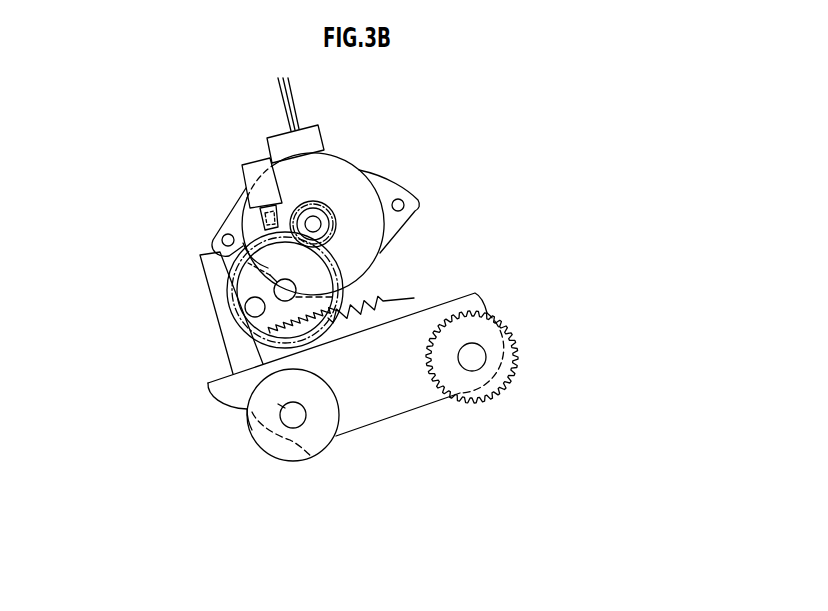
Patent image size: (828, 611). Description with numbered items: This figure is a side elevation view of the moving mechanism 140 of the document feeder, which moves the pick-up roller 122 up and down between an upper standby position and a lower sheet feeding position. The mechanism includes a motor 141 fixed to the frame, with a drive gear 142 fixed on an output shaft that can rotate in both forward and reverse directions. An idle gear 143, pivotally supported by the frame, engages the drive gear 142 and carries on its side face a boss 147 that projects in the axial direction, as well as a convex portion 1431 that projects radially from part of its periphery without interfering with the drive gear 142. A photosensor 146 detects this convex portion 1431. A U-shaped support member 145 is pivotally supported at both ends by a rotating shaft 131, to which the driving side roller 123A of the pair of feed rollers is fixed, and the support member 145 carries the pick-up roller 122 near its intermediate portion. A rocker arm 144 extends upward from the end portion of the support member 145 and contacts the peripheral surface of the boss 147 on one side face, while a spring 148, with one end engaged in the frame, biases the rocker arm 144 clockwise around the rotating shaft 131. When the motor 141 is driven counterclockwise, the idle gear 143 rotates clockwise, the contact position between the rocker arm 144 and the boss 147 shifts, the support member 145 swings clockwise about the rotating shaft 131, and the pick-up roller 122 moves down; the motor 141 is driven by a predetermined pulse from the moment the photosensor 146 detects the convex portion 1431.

The moving mechanism 140 is at (634, 206).
The motor 141 is at (350, 177).
The drive gear 142 is at (333, 237).
The idle gear 143 is at (245, 247).
The convex portion 1431 is at (252, 205).
The rocker arm 144 is at (210, 287).
The support member 145 is at (485, 310).
The photosensor 146 is at (243, 178).
The boss 147 is at (245, 306).
The spring 148 is at (378, 297).
The pick-up roller 122 is at (515, 370).
The driving side roller 123A is at (268, 414).
The rotating shaft 131 is at (288, 413).